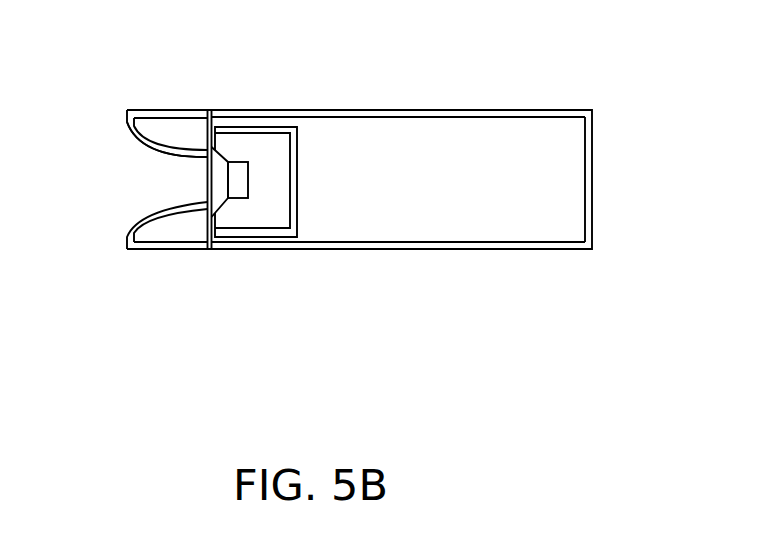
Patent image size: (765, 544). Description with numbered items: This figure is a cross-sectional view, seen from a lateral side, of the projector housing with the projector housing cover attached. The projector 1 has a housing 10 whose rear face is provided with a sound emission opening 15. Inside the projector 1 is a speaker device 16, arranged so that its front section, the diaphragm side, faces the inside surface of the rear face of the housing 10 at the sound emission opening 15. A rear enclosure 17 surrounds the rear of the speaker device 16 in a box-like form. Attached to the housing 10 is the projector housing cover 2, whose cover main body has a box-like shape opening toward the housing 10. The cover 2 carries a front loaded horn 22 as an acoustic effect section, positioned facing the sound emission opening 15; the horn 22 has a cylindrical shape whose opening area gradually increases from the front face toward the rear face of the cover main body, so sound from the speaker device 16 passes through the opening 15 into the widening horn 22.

The projector 1 is at (500, 110).
The housing 10 is at (432, 110).
The projector housing cover 2 is at (178, 110).
The front loaded horn 22 is at (150, 147).
The sound emission opening 15 is at (208, 183).
The speaker device 16 is at (218, 209).
The rear enclosure 17 is at (295, 205).